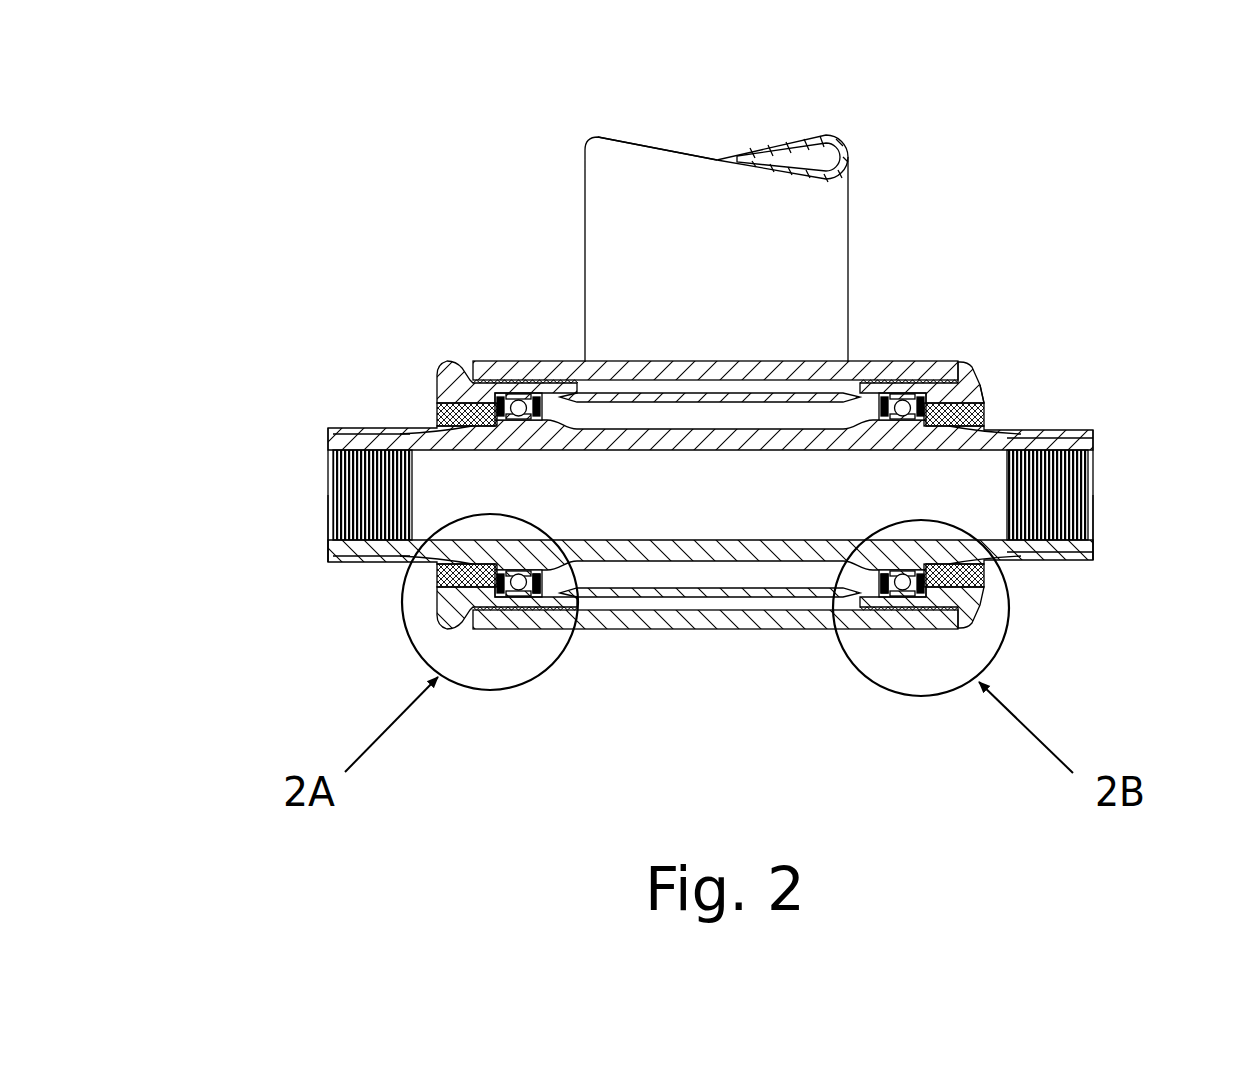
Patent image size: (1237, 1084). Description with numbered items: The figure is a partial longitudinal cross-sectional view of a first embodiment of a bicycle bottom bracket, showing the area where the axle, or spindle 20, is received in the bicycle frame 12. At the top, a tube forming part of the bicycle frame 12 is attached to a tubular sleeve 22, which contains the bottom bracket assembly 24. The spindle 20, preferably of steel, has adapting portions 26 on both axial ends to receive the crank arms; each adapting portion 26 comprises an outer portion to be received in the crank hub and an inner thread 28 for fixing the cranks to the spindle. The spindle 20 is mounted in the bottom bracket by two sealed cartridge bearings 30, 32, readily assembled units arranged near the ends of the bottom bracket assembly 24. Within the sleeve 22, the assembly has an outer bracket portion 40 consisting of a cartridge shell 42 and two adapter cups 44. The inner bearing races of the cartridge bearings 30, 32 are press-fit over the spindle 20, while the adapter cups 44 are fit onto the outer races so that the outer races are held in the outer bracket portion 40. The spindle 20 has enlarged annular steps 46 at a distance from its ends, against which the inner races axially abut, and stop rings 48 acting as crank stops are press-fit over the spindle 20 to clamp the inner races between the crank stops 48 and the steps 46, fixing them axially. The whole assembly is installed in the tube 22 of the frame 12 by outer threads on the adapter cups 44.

The bicycle frame 12 is at (637, 152).
The spindle 20 is at (645, 445).
The tubular sleeve 22 is at (630, 368).
The bottom bracket assembly 24 is at (300, 410).
The adapting portions 26 is at (383, 567).
The inner thread 28 is at (326, 476).
The cartridge bearing 30 is at (521, 390).
The cartridge bearing 32 is at (901, 390).
The outer bracket portion 40 is at (992, 395).
The cartridge shell 42 is at (687, 400).
The adapter cups 44 is at (447, 363).
The annular steps 46 is at (548, 574).
The stop rings 48 is at (436, 404).